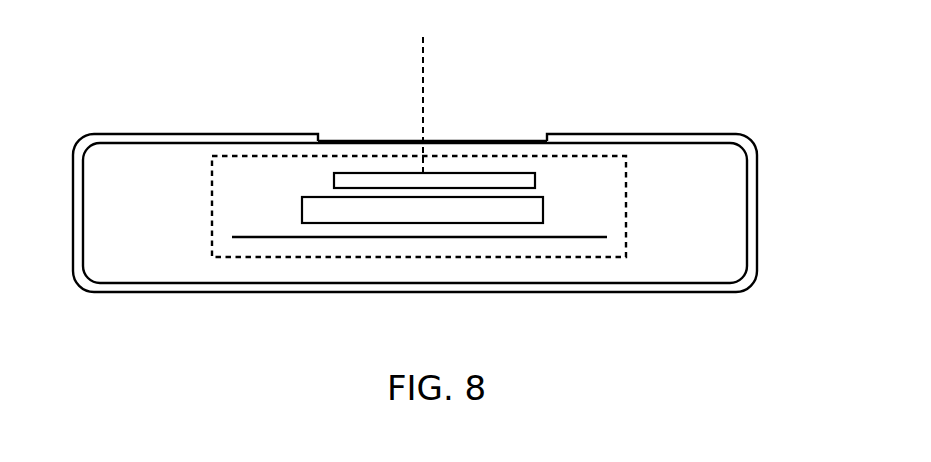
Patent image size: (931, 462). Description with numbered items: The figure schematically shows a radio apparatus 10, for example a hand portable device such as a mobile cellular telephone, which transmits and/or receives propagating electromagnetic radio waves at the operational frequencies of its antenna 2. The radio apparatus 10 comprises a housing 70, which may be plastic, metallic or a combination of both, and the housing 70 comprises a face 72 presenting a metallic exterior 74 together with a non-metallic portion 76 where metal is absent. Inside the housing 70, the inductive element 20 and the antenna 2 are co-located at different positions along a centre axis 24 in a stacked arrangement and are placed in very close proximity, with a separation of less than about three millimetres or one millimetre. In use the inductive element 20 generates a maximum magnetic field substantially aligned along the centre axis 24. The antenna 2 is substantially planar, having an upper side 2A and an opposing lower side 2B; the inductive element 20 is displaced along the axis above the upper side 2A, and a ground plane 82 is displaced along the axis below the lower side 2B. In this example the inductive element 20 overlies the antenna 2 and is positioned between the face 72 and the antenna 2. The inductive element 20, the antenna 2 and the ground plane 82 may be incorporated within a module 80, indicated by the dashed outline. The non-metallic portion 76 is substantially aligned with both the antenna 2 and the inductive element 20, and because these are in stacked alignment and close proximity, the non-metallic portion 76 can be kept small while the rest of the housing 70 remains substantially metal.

The radio apparatus 10 is at (449, 197).
The housing 70 is at (798, 183).
The face 72 is at (642, 128).
The metallic exterior 74 is at (702, 140).
The non-metallic portion 76 is at (430, 143).
The centre axis 24 is at (423, 50).
The module 80 is at (627, 215).
The inductive element 20 is at (334, 177).
The antenna 2 is at (302, 215).
The upper side 2A is at (514, 198).
The lower side 2B is at (423, 223).
The ground plane 82 is at (607, 238).